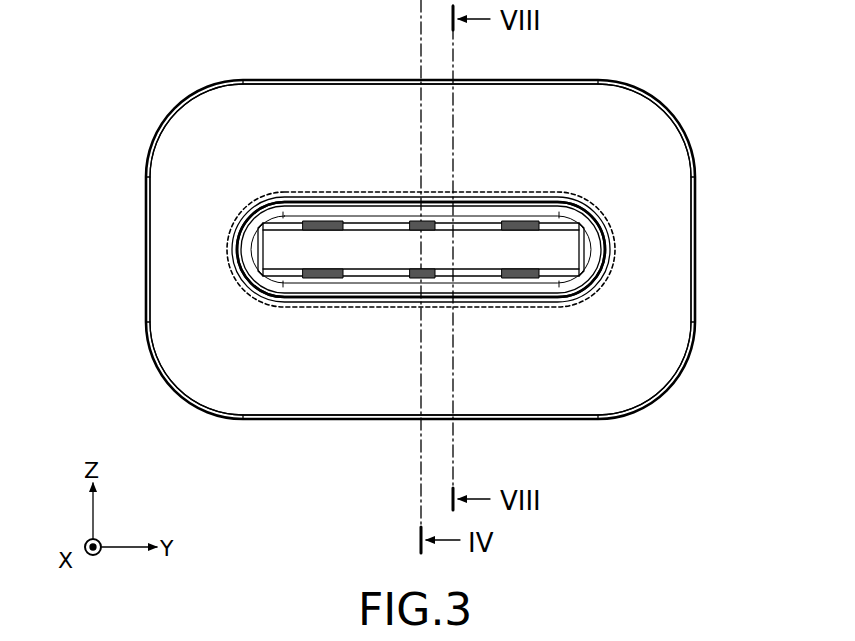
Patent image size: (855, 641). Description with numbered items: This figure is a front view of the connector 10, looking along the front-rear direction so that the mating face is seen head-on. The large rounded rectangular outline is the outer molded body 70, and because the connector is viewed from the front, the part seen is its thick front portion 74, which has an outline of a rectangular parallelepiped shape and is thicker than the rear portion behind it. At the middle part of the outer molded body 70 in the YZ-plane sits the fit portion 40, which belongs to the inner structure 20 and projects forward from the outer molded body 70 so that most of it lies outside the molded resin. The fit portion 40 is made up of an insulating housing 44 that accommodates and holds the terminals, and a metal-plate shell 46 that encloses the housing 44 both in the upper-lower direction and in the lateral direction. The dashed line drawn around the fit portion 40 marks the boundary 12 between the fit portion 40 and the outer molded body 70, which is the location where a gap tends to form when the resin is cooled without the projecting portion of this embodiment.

The connector 10 is at (212, 83).
The front portion 74 is at (613, 130).
The outer molded body 70 is at (420, 249).
The boundary 12 is at (617, 248).
The shell 46 is at (600, 223).
The housing 44 is at (584, 249).
The fit portion 40 is at (593, 298).
The inner structure 20 is at (421, 249).